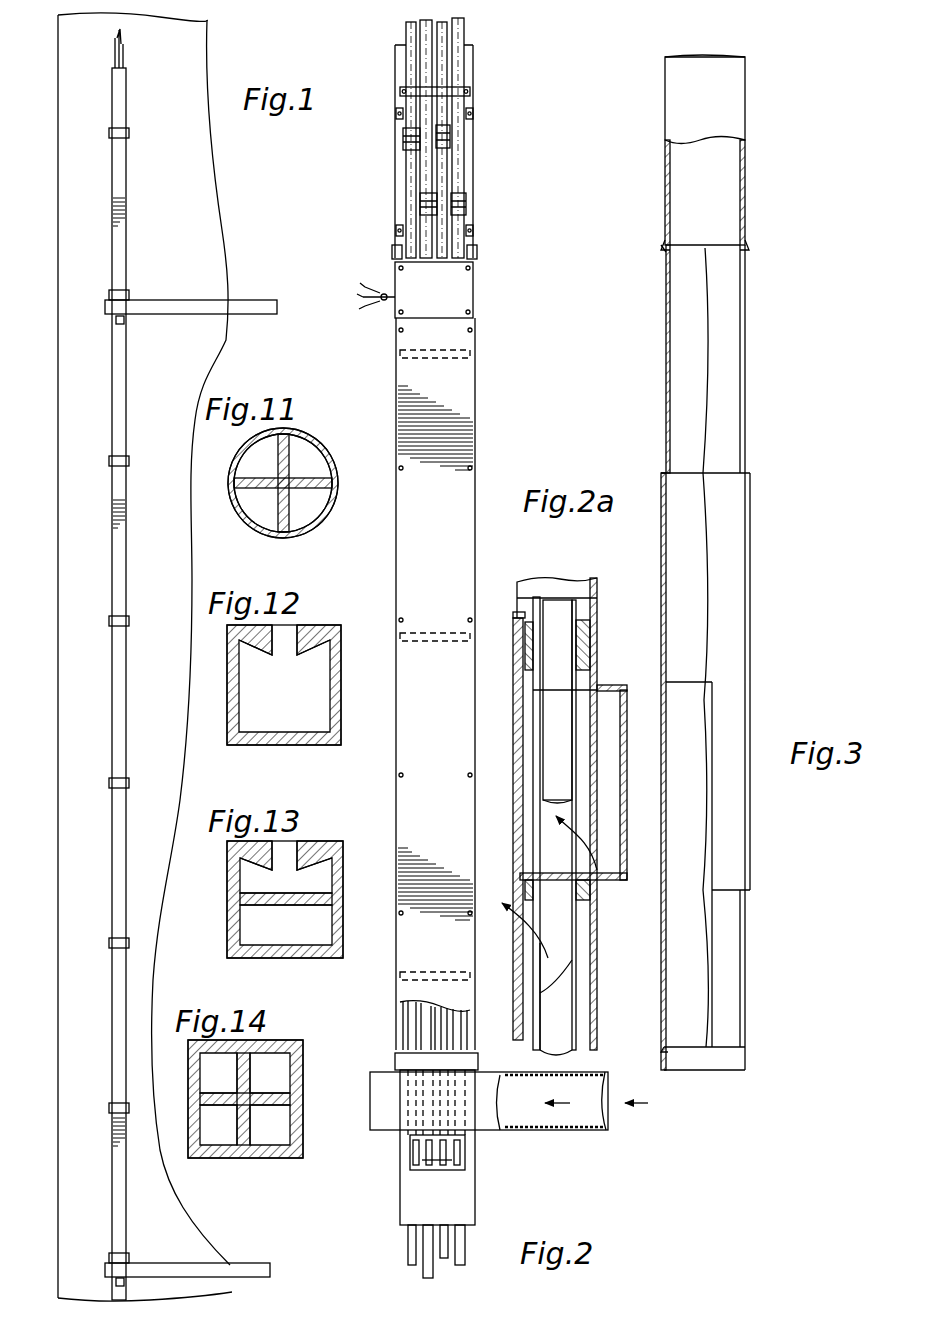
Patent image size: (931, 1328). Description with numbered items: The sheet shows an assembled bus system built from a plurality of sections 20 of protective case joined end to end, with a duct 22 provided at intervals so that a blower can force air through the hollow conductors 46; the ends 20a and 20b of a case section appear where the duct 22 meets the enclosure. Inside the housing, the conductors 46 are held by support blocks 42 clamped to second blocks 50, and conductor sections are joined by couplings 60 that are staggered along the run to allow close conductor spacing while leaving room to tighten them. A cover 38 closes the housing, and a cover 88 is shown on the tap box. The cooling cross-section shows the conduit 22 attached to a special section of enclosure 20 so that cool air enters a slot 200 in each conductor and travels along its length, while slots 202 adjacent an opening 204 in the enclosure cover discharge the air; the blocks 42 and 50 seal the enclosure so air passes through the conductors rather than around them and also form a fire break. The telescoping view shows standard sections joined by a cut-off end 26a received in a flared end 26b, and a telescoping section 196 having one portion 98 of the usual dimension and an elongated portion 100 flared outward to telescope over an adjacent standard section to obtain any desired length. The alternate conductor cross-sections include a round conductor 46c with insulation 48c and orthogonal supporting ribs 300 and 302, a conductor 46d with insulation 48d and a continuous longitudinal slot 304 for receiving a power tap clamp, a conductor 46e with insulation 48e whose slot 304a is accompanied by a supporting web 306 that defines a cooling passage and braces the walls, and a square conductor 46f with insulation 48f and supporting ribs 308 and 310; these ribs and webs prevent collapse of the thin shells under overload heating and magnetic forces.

In FIG. 1, the section of protective case 20 is at (127, 532).
In FIG. 2A, the section of protective case 20 is at (520, 791).
In FIG. 2, the pole lower section 20a is at (400, 1056).
In FIG. 2A, the pole section end 20b is at (535, 856).
In FIG. 1, the cooling air duct 22 is at (250, 301).
In FIG. 2, the cooling air duct 22 is at (590, 1131).
In FIG. 2A, the cooling air duct 22 is at (627, 751).
In FIG. 3, the cut-off end of U-shaped section 26a is at (664, 243).
In FIG. 3, the flared end of U-shaped section 26b is at (665, 249).
In FIG. 2, the cover 38 is at (470, 399).
In FIG. 2A, the support block 42 is at (532, 689).
In FIG. 2, the conductor 46 is at (412, 35).
In FIG. 11, the conductor 46c is at (310, 433).
In FIG. 12, the conductor 46d is at (296, 745).
In FIG. 13, the conductor 46e is at (343, 870).
In FIG. 14, the conductor 46f is at (275, 1158).
In FIG. 11, the layer of insulation 48c is at (312, 471).
In FIG. 12, the layer of insulation 48d is at (341, 685).
In FIG. 13, the layer of insulation 48e is at (343, 940).
In FIG. 14, the layer of insulation 48f is at (222, 1158).
In FIG. 2, the second block 50 is at (405, 92).
In FIG. 2A, the second block 50 is at (590, 673).
In FIG. 2, the coupling 60 is at (408, 141).
In FIG. 2, the cover 88 is at (455, 299).
In FIG. 3, the portion of usual dimension 98 is at (665, 409).
In FIG. 3, the elongated flared portion 100 is at (660, 597).
In FIG. 3, the telescoping section 196 is at (658, 474).
In FIG. 2A, the slot 200 is at (572, 822).
In FIG. 2, the slot 202 is at (412, 1156).
In FIG. 2A, the slot 202 is at (540, 944).
In FIG. 1, the opening 204 is at (116, 319).
In FIG. 2, the opening 204 is at (420, 1170).
In FIG. 2A, the opening 204 is at (518, 994).
In FIG. 11, the supporting rib 300 is at (306, 511).
In FIG. 11, the supporting rib 302 is at (258, 510).
In FIG. 12, the longitudinal slot 304 is at (283, 650).
In FIG. 13, the slot 304a is at (287, 865).
In FIG. 13, the supporting web 306 is at (295, 900).
In FIG. 14, the supporting rib 308 is at (265, 1082).
In FIG. 14, the supporting rib 310 is at (256, 1108).